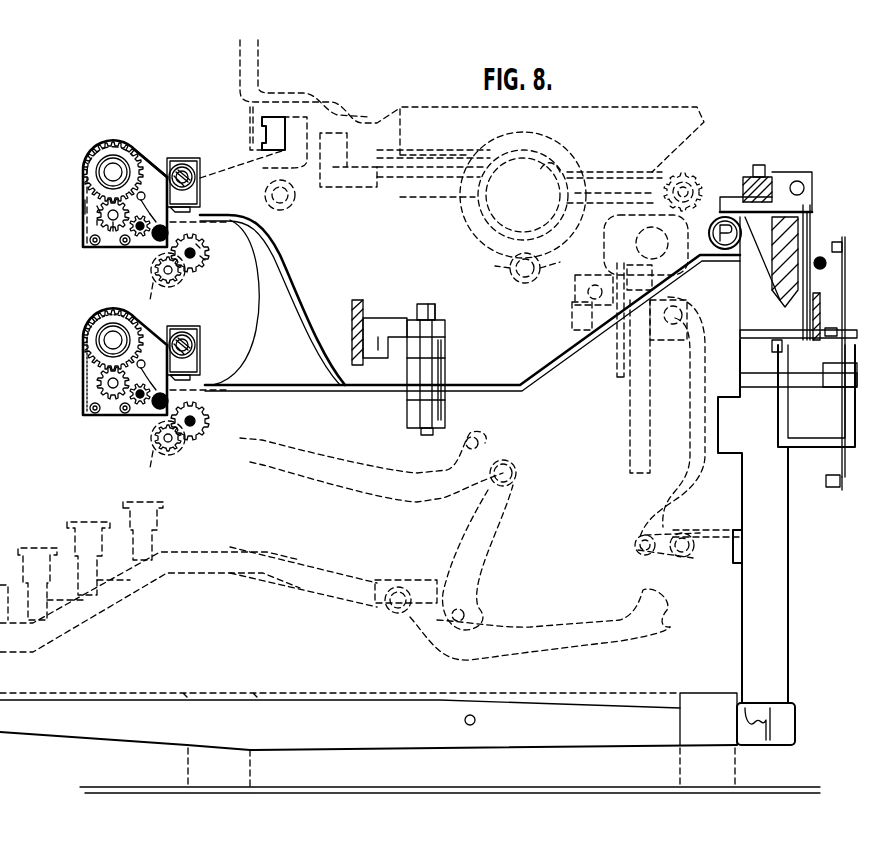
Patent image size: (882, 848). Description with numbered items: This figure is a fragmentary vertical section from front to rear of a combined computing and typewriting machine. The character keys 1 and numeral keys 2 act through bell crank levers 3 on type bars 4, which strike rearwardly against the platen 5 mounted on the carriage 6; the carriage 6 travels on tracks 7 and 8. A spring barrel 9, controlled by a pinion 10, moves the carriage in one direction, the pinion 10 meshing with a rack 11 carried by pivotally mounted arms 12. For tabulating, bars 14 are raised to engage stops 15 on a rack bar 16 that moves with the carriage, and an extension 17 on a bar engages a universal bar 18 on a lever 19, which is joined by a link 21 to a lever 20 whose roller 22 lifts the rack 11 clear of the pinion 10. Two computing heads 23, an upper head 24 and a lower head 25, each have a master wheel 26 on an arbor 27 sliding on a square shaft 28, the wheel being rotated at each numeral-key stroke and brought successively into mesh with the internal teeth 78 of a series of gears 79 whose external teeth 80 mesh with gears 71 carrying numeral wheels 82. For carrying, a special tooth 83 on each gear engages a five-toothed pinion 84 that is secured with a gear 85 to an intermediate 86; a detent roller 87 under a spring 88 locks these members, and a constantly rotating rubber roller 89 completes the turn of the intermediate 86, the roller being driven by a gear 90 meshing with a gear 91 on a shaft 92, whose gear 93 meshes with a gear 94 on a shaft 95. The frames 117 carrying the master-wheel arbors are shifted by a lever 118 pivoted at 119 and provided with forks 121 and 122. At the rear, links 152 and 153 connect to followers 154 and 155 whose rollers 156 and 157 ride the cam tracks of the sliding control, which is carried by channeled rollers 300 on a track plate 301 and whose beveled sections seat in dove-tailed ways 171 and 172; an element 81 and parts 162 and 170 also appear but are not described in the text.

The character keys 1 is at (93, 553).
The numeral keys 2 is at (146, 522).
The bell crank levers 3 is at (478, 535).
The type bars 4 is at (378, 472).
The platen 5 is at (570, 172).
The carriage 6 is at (588, 116).
The track 7 is at (280, 116).
The track 8 is at (646, 245).
The spring barrel 9 is at (640, 410).
The pinion 10 is at (605, 335).
The rack 11 is at (572, 297).
The pivotally mounted arms 12 is at (530, 282).
The bars 14 is at (800, 223).
The stops 15 is at (780, 172).
The rack bar 16 is at (757, 166).
The extension 17 is at (735, 562).
The universal bar 18 is at (738, 528).
The lever 19 is at (672, 556).
The lever 20 is at (676, 314).
The link 21 is at (703, 358).
The roller 22 is at (578, 320).
The computing heads 23 is at (83, 233).
The upper computing head 24 is at (83, 246).
The lower computing head 25 is at (141, 388).
The master wheel 26 is at (100, 213).
The arbor 27 is at (85, 207).
The square shaft 28 is at (113, 232).
The gears 71 is at (84, 160).
The internal teeth 78 is at (140, 157).
The gears 79 is at (97, 222).
The external teeth 80 is at (97, 208).
The bearing boss 81 is at (100, 150).
The numeral or computing wheels 82 is at (116, 166).
The special tooth 83 is at (121, 248).
The five-toothed pinion 84 is at (159, 242).
The gear 85 is at (138, 242).
The intermediate 86 is at (138, 396).
The detent roller 87 is at (181, 201).
The spring 88 is at (190, 167).
The rubber roller 89 is at (190, 250).
The gear 90 is at (198, 224).
The gear 91 is at (182, 292).
The shaft 92 is at (181, 272).
The gear 93 is at (176, 279).
The gear 94 is at (200, 246).
The shaft 95 is at (205, 258).
The frames 117 is at (212, 186).
The lever 118 is at (312, 320).
The pivot 119 is at (445, 329).
The fork 121 is at (285, 257).
The fork 122 is at (245, 392).
The link 152 is at (843, 247).
The link 153 is at (840, 485).
The follower 154 is at (846, 270).
The follower 155 is at (843, 470).
The roller 156 is at (838, 333).
The roller 157 is at (848, 370).
The pin 162 is at (805, 190).
The pivot 170 is at (759, 262).
The way 171 is at (775, 352).
The way 172 is at (770, 376).
The channeled rollers 300 is at (818, 257).
The track plate 301 is at (822, 322).